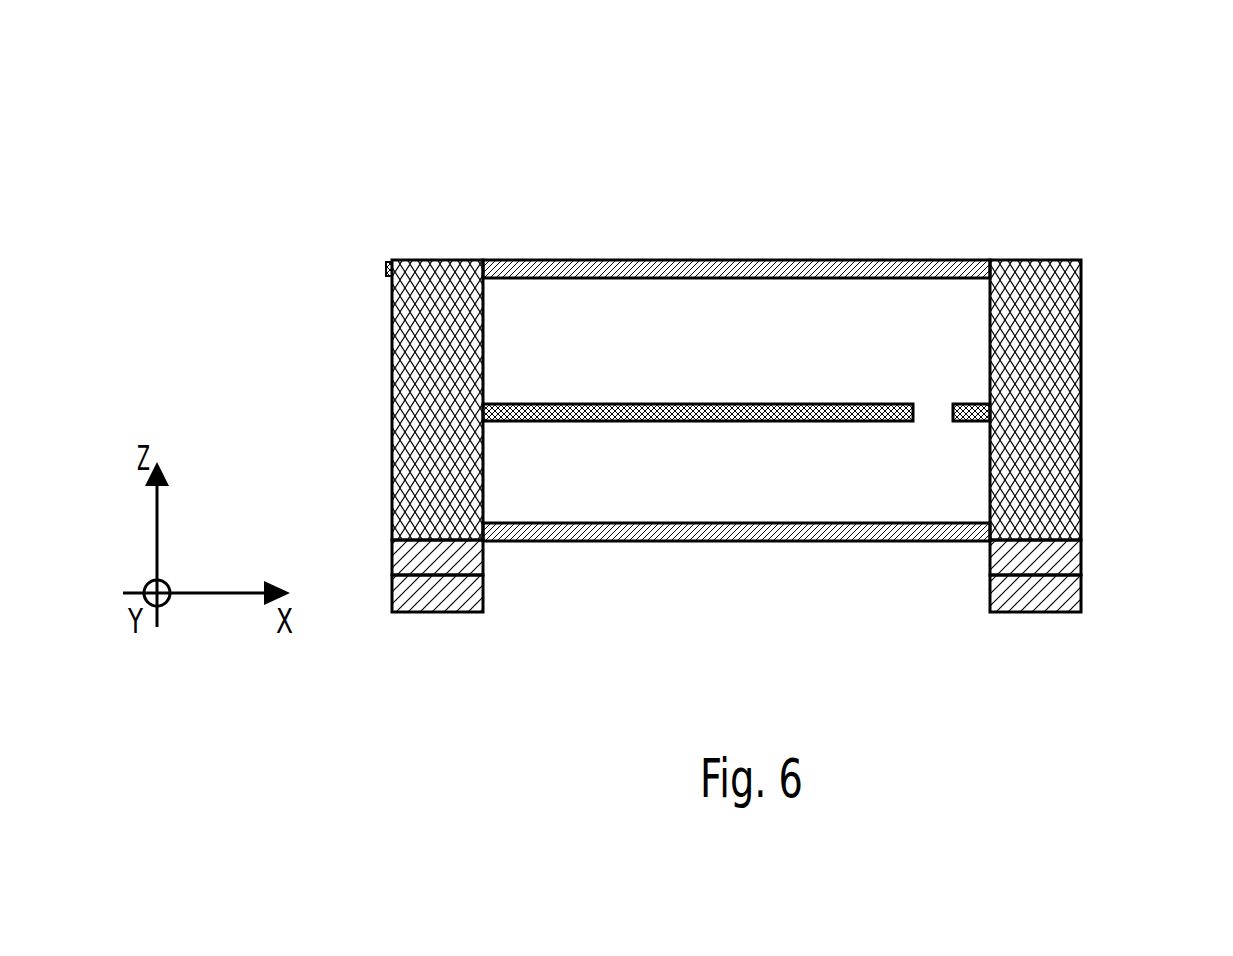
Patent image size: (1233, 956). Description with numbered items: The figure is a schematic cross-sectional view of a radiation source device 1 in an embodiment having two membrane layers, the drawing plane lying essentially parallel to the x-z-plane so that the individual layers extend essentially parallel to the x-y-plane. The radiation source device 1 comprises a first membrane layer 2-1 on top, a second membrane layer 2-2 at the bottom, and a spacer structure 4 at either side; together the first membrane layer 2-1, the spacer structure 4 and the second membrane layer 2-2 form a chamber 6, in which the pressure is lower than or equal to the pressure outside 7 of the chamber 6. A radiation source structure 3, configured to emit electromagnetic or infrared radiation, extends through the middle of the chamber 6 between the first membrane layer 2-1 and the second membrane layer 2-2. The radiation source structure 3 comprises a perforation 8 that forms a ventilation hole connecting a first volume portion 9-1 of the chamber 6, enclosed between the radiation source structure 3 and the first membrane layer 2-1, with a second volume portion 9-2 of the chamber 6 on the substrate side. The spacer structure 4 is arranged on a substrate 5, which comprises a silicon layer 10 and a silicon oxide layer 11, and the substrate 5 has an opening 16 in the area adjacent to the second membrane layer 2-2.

The radiation source device 1 is at (1170, 93).
The first membrane layer 2-1 is at (925, 270).
The second membrane layer 2-2 is at (910, 536).
The radiation source structure 3 is at (577, 407).
The spacer structure 4 is at (1035, 444).
The substrate 5 is at (1176, 530).
The chamber 6 is at (518, 300).
The outside of the chamber 7 is at (368, 283).
The perforation 8 is at (932, 410).
The first volume portion 9-1 is at (736, 341).
The second volume portion 9-2 is at (736, 472).
The silicon layer 10 is at (1078, 597).
The silicon oxide layer 11 is at (1078, 560).
The opening 16 is at (680, 604).